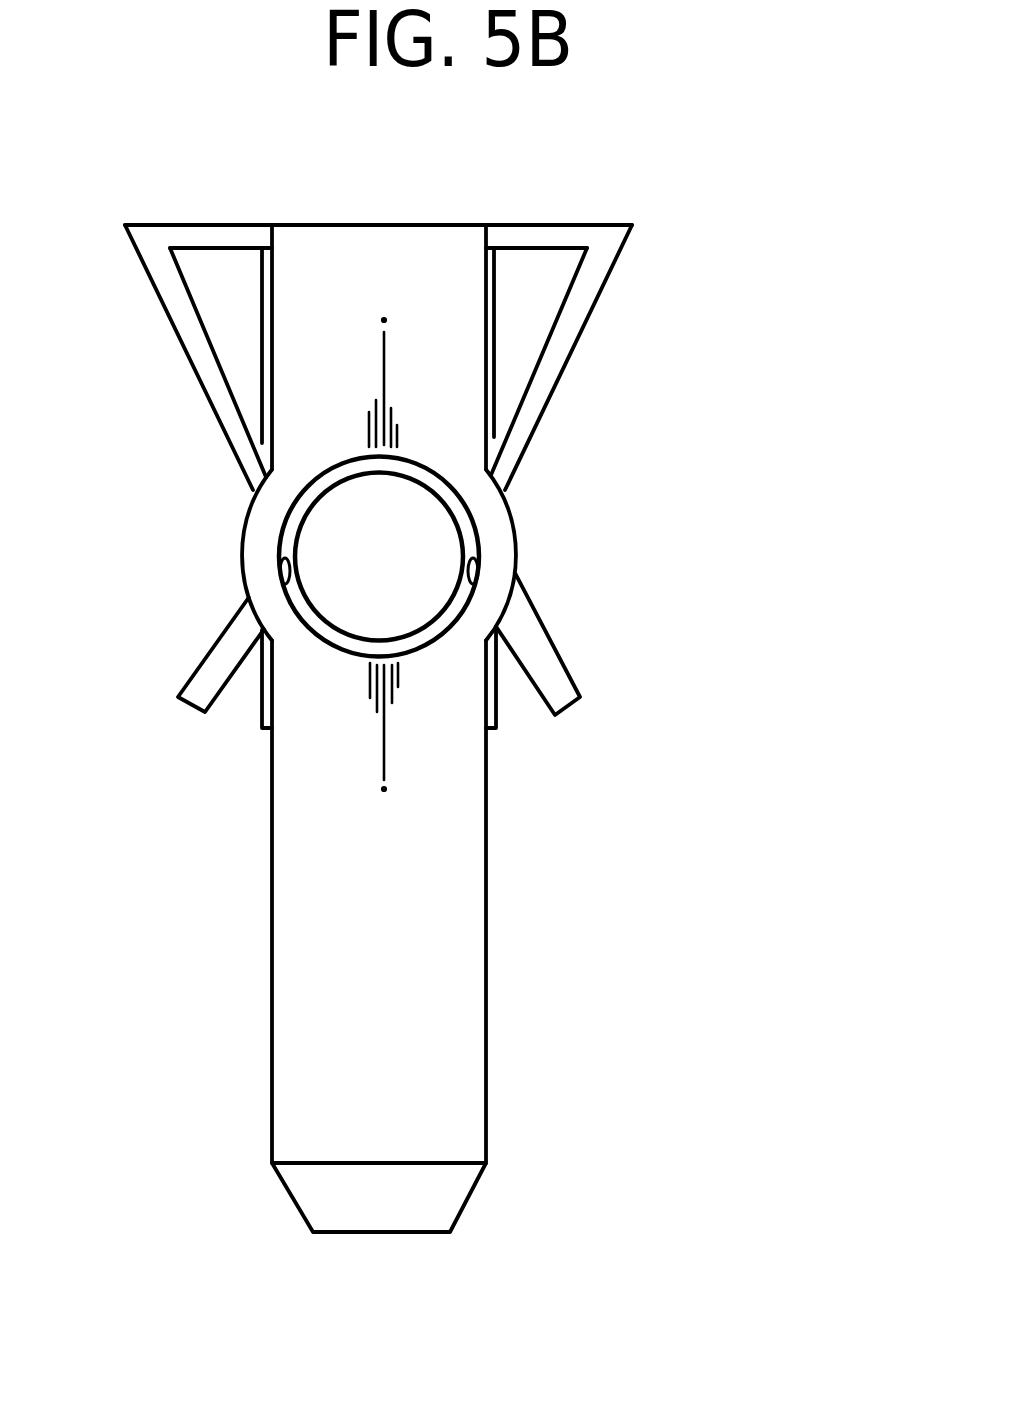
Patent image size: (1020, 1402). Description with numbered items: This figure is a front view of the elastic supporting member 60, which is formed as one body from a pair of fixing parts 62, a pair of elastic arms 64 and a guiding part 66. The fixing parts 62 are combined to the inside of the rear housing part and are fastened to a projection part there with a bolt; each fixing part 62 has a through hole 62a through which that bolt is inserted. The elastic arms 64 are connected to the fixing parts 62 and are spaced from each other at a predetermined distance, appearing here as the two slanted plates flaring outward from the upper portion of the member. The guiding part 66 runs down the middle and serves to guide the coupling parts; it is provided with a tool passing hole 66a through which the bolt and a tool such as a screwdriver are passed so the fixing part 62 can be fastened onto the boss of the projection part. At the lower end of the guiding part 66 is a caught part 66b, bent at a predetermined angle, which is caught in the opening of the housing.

The elastic supporting member 60 is at (808, 186).
The elastic arms 64 is at (175, 297).
The fixing parts 62 is at (262, 718).
The through hole 62a is at (275, 558).
The guiding part 66 is at (478, 870).
The tool passing hole 66a is at (480, 559).
The caught part 66b is at (455, 1196).